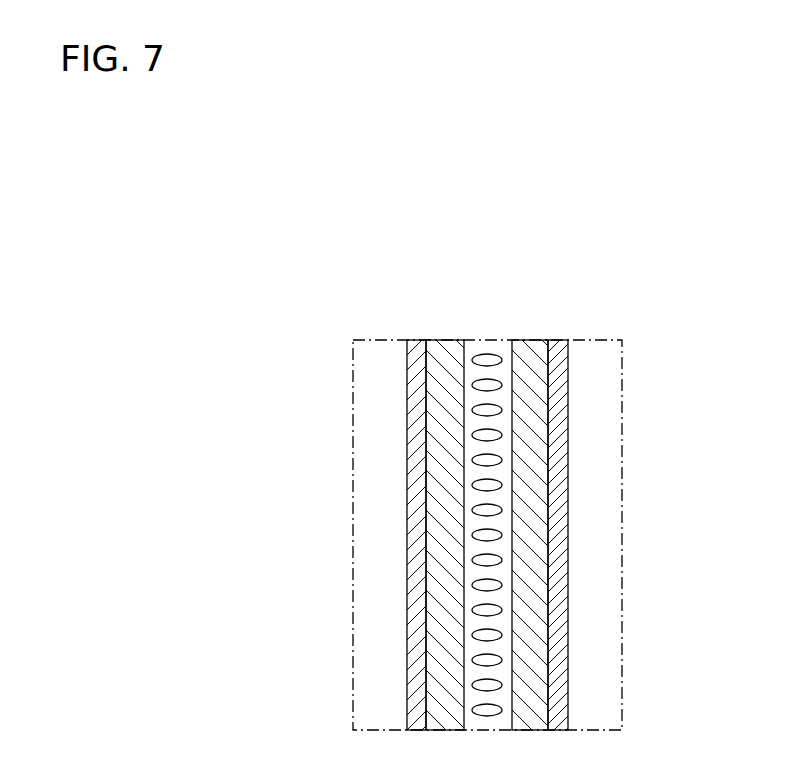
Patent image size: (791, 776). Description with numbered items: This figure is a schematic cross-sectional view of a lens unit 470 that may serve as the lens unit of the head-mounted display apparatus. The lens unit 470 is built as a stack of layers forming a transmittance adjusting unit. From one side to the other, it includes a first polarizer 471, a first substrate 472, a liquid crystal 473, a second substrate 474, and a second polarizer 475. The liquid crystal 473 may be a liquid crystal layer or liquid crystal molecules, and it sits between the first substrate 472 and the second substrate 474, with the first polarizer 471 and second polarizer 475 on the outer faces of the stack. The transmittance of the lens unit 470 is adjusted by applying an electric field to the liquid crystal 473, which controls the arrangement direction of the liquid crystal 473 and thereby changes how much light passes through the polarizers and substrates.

The lens unit 470 is at (653, 274).
The first polarizer 471 is at (418, 340).
The first substrate 472 is at (441, 340).
The liquid crystal 473 is at (488, 340).
The second substrate 474 is at (534, 340).
The second polarizer 475 is at (560, 340).